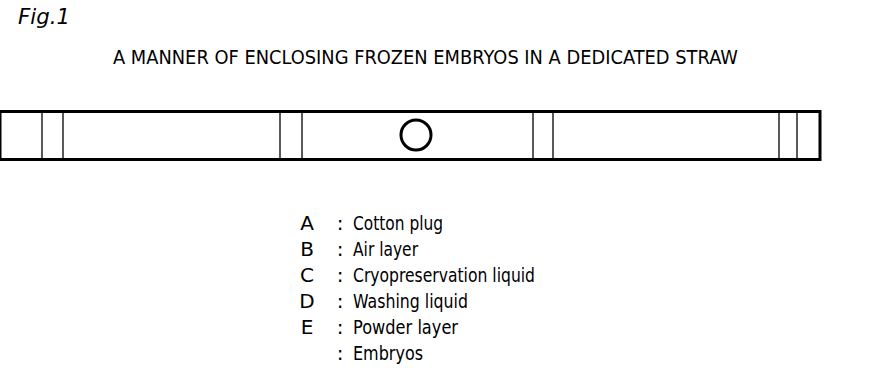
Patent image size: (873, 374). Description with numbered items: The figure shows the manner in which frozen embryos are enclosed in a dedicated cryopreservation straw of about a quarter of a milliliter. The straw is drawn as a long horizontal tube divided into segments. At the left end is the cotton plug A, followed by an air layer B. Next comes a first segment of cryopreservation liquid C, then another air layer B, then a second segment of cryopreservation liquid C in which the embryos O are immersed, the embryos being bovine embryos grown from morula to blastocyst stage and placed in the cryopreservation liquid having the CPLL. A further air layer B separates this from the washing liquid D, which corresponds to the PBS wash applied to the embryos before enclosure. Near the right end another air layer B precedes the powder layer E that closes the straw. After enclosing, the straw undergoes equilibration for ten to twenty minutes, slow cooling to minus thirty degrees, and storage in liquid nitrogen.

The cotton plug A is at (25, 135).
The air layer B is at (421, 135).
The cryopreservation liquid C is at (298, 136).
The washing liquid D is at (666, 136).
The powder layer E is at (808, 136).
The embryos O is at (366, 240).